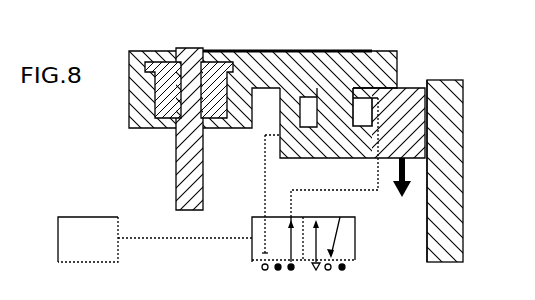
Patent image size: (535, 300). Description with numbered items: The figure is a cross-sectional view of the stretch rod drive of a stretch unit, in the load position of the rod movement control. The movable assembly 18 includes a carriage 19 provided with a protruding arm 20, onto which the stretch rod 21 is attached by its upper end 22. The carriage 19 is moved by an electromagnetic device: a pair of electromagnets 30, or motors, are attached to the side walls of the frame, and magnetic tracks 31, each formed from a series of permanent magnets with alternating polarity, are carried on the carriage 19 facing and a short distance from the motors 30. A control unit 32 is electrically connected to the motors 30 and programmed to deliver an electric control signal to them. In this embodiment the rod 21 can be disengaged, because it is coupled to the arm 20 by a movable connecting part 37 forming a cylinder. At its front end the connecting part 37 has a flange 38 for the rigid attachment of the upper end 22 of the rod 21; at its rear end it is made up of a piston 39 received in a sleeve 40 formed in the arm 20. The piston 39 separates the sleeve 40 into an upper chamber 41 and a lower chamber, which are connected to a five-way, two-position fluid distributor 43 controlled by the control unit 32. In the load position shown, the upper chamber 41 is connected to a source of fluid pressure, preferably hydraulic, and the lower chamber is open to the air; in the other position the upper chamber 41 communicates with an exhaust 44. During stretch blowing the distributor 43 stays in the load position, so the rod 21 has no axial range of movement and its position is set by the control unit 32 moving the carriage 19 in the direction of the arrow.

The movable assembly 18 is at (398, 48).
The carriage 19 is at (409, 103).
The protruding arm 20 is at (412, 78).
The stretch rod 21 is at (187, 163).
The upper end 22 is at (182, 44).
The electromagnet 30 is at (445, 207).
The magnetic track 31 is at (428, 122).
The control unit 32 is at (90, 263).
The movable connecting part 37 is at (295, 47).
The flange 38 is at (150, 106).
The piston 39 is at (333, 141).
The sleeve 40 is at (380, 121).
The upper chamber 41 is at (305, 112).
The five-way fluid distributor 43 is at (250, 256).
The exhaust 44 is at (331, 270).